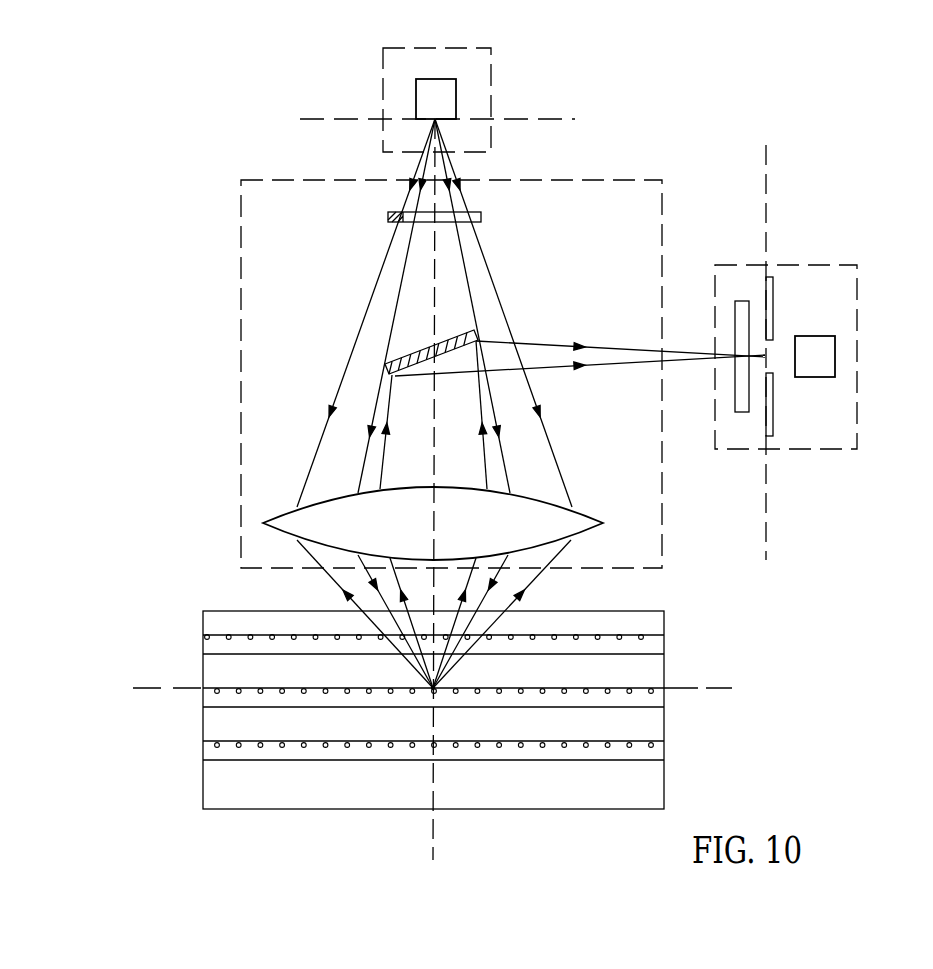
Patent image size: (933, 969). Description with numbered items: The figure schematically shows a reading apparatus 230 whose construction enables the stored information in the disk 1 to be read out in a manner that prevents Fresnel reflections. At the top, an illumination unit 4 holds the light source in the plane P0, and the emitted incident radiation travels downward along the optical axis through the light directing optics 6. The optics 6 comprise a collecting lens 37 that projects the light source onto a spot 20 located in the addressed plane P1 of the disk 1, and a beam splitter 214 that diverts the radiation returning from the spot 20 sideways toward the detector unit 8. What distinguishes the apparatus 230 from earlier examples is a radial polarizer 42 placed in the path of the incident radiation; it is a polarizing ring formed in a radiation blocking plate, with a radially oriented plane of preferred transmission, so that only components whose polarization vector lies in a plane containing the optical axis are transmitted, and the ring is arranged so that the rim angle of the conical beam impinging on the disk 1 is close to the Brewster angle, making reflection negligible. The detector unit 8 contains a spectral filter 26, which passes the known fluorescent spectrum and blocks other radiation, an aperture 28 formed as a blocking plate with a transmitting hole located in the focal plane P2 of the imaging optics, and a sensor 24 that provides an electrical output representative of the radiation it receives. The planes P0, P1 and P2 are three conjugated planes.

The reading apparatus 230 is at (262, 102).
The illumination unit 4 is at (498, 58).
The light source plane P0 is at (555, 120).
The light directing optics 6 is at (573, 173).
The radial polarizer 42 is at (392, 208).
The beam splitter 214 is at (413, 347).
The collecting lens 37 is at (577, 512).
The detector unit 8 is at (840, 265).
The spectral filter 26 is at (735, 393).
The aperture 28 is at (768, 277).
The sensor 24 is at (812, 337).
The imaging plane P2 is at (766, 518).
The disk 1 is at (662, 600).
The spot 20 is at (433, 690).
The addressed plane P1 is at (698, 688).